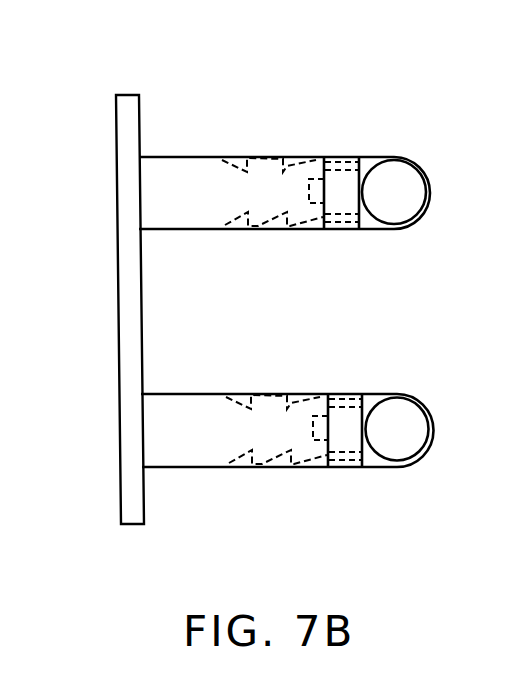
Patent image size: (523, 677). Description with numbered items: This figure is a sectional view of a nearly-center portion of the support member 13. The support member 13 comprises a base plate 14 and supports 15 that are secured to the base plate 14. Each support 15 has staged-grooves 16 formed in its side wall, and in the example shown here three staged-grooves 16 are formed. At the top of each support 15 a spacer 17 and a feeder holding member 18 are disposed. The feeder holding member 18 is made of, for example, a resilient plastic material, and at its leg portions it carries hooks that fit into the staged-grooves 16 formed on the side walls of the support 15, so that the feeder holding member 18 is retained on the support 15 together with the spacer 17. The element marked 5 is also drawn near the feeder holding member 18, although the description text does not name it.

The support member 13 is at (222, 47).
The base plate 14 is at (127, 146).
The support 15 is at (187, 216).
The staged-groove 16 is at (275, 157).
The spacer 17 is at (347, 207).
The feeder holding member 18 is at (424, 166).
The tool shank 5 is at (400, 207).